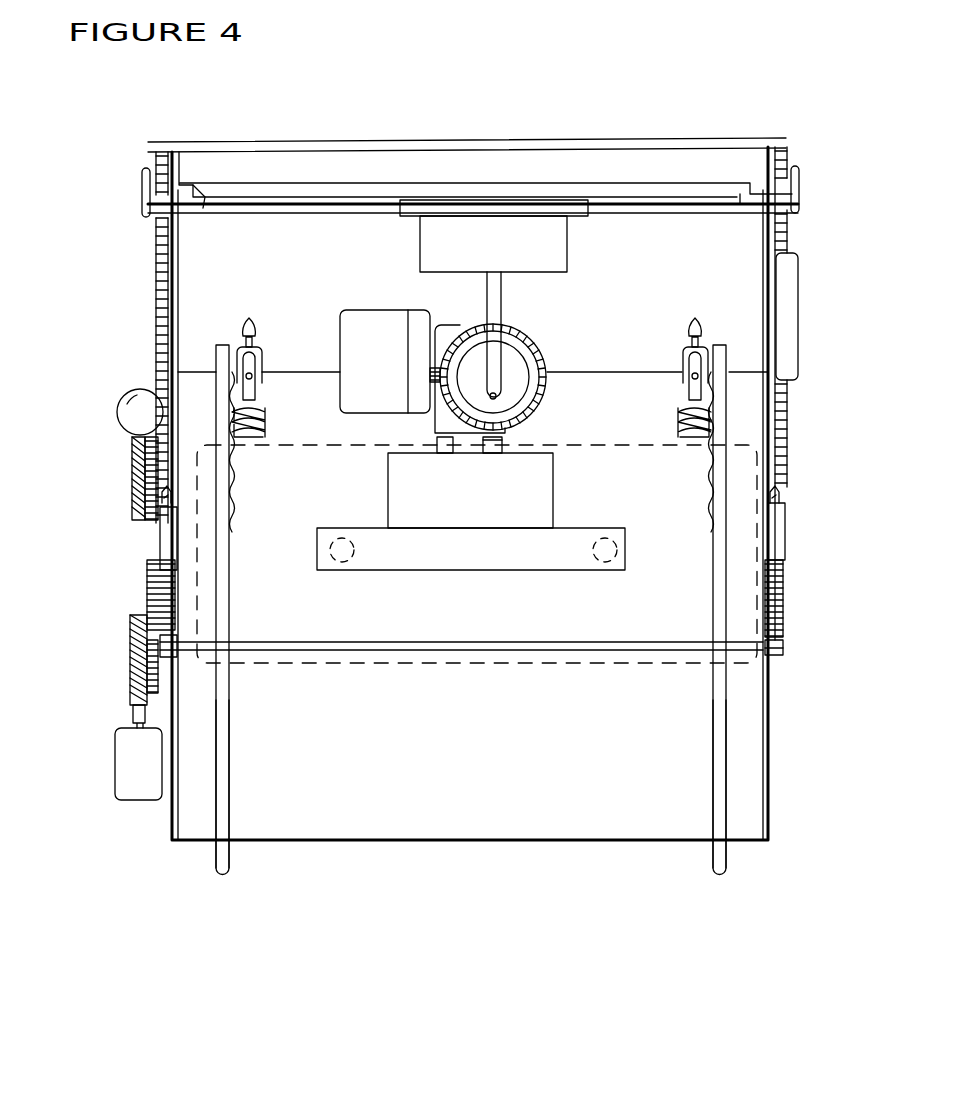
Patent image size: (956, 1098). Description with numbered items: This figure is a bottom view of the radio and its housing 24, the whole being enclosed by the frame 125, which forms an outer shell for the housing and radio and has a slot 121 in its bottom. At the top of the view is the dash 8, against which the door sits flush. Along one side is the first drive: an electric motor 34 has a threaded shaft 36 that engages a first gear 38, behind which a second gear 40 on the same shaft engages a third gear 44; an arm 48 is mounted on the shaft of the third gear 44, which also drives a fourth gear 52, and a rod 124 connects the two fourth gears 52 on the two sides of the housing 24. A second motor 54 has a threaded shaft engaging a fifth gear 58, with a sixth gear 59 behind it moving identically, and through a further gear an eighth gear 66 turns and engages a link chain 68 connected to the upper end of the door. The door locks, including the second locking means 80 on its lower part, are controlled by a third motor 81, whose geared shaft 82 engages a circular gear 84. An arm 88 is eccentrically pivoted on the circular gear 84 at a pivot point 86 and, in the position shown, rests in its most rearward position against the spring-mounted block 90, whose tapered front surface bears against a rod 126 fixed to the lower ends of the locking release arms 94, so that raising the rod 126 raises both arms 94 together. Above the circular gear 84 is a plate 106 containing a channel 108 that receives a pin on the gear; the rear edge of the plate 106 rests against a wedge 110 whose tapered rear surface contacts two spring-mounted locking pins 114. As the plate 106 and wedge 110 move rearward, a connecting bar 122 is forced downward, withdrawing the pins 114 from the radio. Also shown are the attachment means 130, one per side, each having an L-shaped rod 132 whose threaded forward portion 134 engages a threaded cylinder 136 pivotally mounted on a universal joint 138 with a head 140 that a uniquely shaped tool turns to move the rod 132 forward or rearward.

The dash 8 is at (745, 140).
The housing 24 is at (430, 664).
The electric motor 34 is at (132, 780).
The threaded shaft 36 is at (130, 702).
The first gear 38 is at (132, 630).
The second gear 40 is at (130, 680).
The third gear 44 is at (783, 605).
The arm 48 is at (781, 551).
The fourth gear 52 is at (784, 648).
The second motor 54 is at (140, 415).
The fifth gear 58 is at (136, 450).
The sixth gear 59 is at (150, 468).
The eighth gear 66 is at (786, 497).
The link chain 68 is at (786, 430).
The second locking means 80 is at (204, 197).
The third motor 81 is at (368, 332).
The geared shaft 82 is at (438, 382).
The circular gear 84 is at (516, 337).
The pivot point 86 is at (497, 397).
The arm 88 is at (498, 300).
The block 90 is at (560, 240).
The locking release arm 94 is at (799, 187).
The plate 106 is at (461, 451).
The channel 108 is at (450, 330).
The wedge 110 is at (400, 495).
The locking pins 114 is at (612, 566).
The slot 121 is at (489, 445).
The connecting bar 122 is at (507, 548).
The rod 124 is at (600, 645).
The frame 125 is at (330, 843).
The rod 126 is at (682, 209).
The attachment means 130 is at (716, 578).
The L-shaped rod 132 is at (722, 778).
The forward portion 134 is at (713, 498).
The threaded cylinder 136 is at (677, 425).
The universal joint 138 is at (688, 384).
The head 140 is at (689, 340).